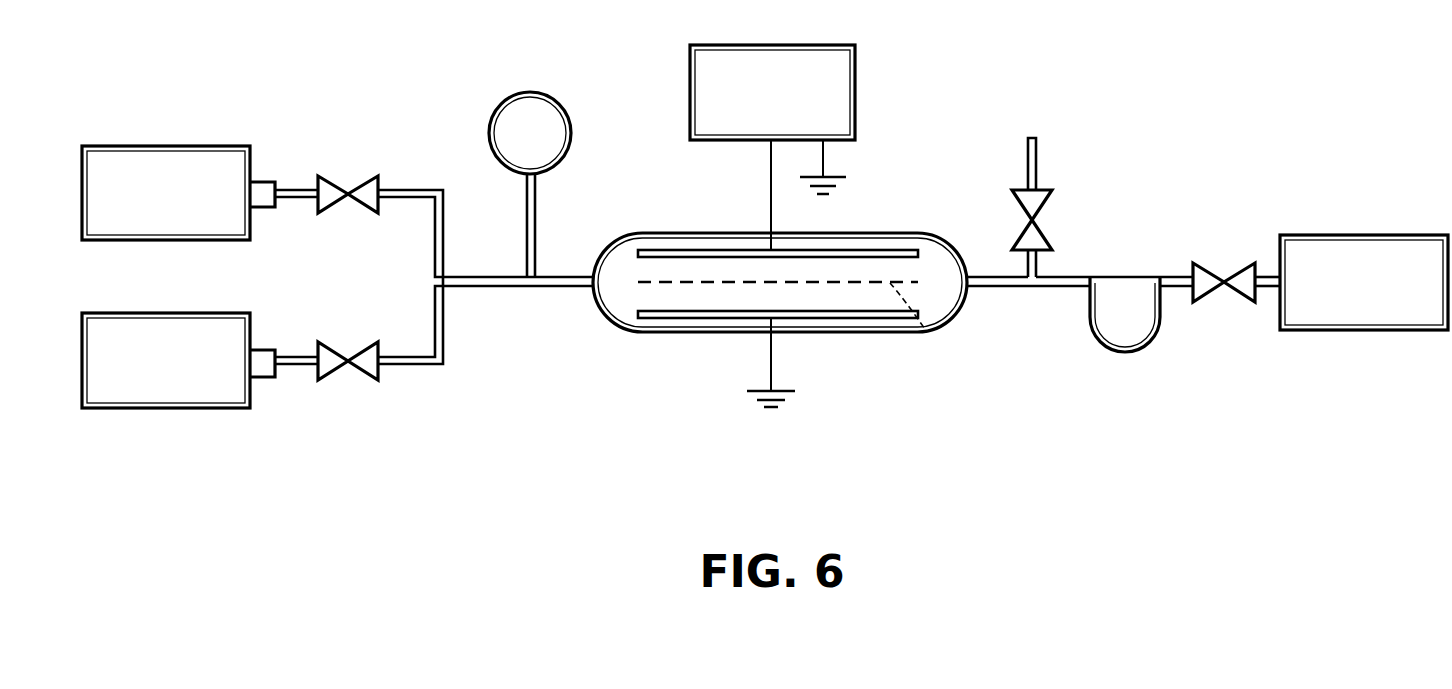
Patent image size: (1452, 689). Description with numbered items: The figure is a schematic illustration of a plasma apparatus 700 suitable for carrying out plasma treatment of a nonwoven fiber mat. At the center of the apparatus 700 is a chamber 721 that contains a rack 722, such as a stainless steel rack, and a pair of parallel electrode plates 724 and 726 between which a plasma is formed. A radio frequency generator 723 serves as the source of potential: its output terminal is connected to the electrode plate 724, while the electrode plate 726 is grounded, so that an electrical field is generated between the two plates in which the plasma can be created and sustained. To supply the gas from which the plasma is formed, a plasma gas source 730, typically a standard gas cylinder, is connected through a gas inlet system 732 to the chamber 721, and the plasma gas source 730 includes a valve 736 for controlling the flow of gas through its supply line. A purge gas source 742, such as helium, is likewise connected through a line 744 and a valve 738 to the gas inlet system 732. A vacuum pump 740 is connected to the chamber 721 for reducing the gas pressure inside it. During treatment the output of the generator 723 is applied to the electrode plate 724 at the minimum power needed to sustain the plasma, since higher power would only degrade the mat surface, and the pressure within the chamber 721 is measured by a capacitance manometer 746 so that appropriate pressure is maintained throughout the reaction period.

The plasma apparatus 700 is at (428, 80).
The chamber 721 is at (733, 333).
The rack 722 is at (927, 332).
The radio frequency generator 723 is at (815, 45).
The electrode plate 724 is at (675, 250).
The electrode plate 726 is at (838, 318).
The plasma gas source 730 is at (168, 146).
The gas inlet system 732 is at (410, 270).
The valve 736 is at (360, 180).
The valve 738 is at (361, 382).
The vacuum pump 740 is at (1385, 235).
The purge gas source 742 is at (168, 313).
The line 744 is at (291, 357).
The capacitance manometer 746 is at (530, 93).